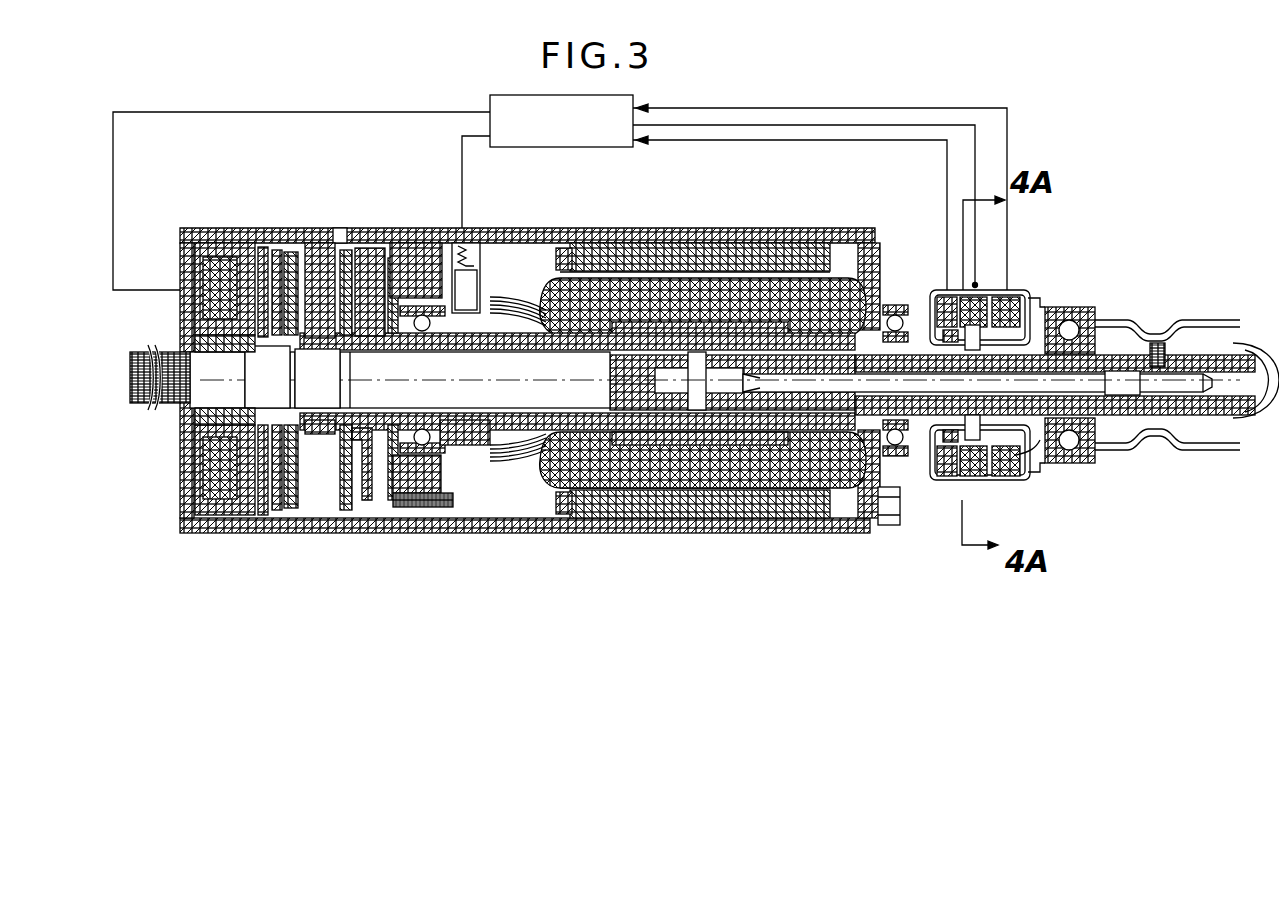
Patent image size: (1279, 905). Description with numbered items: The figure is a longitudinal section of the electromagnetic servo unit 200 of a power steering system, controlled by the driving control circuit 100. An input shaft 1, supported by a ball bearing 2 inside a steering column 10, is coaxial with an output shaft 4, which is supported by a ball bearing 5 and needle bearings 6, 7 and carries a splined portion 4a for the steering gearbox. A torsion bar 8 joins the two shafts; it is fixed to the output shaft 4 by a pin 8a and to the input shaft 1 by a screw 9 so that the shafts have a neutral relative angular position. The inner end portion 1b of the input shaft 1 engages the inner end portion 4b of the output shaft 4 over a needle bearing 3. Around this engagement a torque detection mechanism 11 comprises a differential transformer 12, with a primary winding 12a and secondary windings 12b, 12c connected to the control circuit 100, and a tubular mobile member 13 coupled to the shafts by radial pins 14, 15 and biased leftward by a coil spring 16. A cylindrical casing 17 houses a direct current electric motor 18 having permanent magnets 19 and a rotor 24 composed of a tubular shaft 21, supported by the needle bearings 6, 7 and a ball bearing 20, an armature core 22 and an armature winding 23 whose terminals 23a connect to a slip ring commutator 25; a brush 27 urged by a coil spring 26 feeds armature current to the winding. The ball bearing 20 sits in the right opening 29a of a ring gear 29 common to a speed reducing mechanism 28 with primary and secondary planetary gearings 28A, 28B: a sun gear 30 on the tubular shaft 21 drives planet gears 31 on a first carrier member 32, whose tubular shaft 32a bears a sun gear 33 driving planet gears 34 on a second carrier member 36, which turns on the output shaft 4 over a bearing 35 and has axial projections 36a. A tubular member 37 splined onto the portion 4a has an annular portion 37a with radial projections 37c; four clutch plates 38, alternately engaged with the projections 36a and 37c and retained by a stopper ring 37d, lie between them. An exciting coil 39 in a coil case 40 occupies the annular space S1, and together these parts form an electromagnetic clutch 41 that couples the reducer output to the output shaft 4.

The input shaft 1 is at (1258, 370).
The axially inner end portion of the input shaft 1b is at (932, 428).
The ball bearing 2 is at (1088, 322).
The needle bearing 3 is at (923, 418).
The output shaft 4 is at (550, 400).
The splined portion 4a is at (170, 378).
The axially inner end portion of the output shaft 4b is at (930, 442).
The ball bearing 5 is at (903, 297).
The needle bearing 6 is at (810, 488).
The needle bearing 7 is at (492, 420).
The torsion bar 8 is at (1082, 387).
The pin 8a is at (698, 405).
The screw 9 is at (1157, 343).
The steering column 10 is at (1042, 307).
The torque detection mechanism 11 is at (1010, 297).
The differential transformer 12 is at (975, 483).
The primary winding 12a is at (980, 297).
The secondary winding 12b is at (1002, 297).
The secondary winding 12c is at (907, 292).
The tubular mobile member 13 is at (933, 292).
The radial pin 14 is at (948, 323).
The radial pin 15 is at (987, 483).
The coil spring 16 is at (1043, 463).
The cylindrical casing 17 is at (788, 230).
The electric motor 18 is at (847, 270).
The permanent magnets 19 is at (727, 247).
The ball bearing 20 is at (420, 293).
The tubular shaft 21 is at (630, 337).
The armature core 22 is at (668, 277).
The armature winding 23 is at (705, 277).
The terminals 23a is at (540, 292).
The rotor 24 is at (565, 262).
The slip ring commutator 25 is at (490, 313).
The coil spring 26 is at (458, 245).
The brush 27 is at (470, 283).
The speed reducing mechanism 28 is at (343, 262).
The primary planetary gearing 28A is at (387, 260).
The secondary planetary gearing 28B is at (297, 247).
The cylindrical ring gear 29 is at (413, 240).
The right opening 29a is at (394, 507).
The sun gear 30 is at (377, 425).
The planet gears 31 is at (388, 350).
The first carrier member 32 is at (348, 420).
The tubular shaft 32a is at (318, 455).
The sun gear 33 is at (313, 413).
The planet gears 34 is at (332, 345).
The bearing 35 is at (282, 415).
The second carrier member 36 is at (278, 500).
The projections 36a is at (287, 250).
The tubular member 37 is at (217, 243).
The annular portion 37a is at (250, 452).
The small radial projections 37c is at (223, 307).
The stopper ring 37d is at (200, 518).
The clutch plates 38 is at (232, 517).
The exciting coil 39 is at (212, 250).
The coil case 40 is at (205, 340).
The electromagnetic clutch 41 is at (208, 488).
The annular space S1 is at (250, 250).
The driving control circuit 100 is at (587, 148).
The electromagnetic servo unit 200 is at (660, 615).